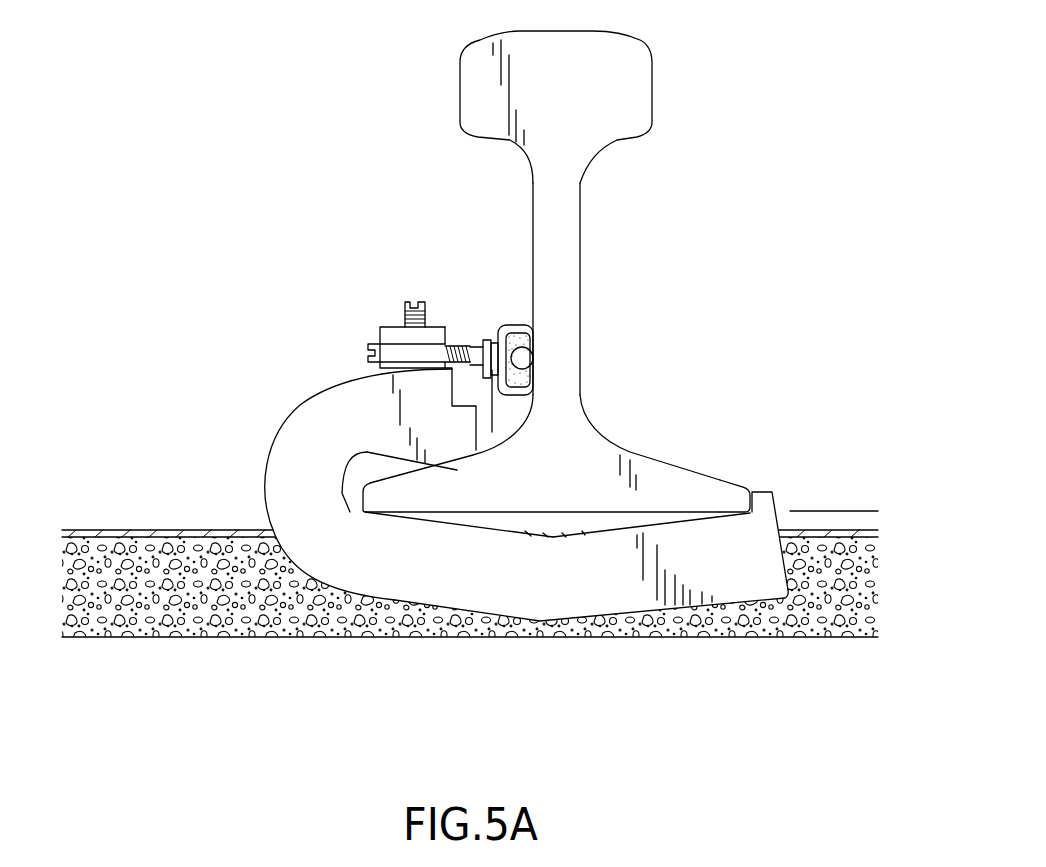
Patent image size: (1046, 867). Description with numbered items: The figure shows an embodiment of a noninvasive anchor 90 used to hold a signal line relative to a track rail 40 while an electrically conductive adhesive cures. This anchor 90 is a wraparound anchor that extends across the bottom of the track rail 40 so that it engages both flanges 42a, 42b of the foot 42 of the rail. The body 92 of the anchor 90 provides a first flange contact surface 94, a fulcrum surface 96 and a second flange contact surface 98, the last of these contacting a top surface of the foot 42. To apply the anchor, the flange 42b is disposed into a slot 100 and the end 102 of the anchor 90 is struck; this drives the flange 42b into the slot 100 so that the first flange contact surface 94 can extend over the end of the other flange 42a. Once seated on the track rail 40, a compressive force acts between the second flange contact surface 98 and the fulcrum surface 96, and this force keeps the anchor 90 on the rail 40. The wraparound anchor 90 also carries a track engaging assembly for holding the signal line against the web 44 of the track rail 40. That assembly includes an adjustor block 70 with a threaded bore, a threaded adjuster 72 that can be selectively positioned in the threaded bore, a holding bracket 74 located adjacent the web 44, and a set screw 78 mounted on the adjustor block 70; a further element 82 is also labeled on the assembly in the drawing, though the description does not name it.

The track rail 40 is at (665, 102).
The foot 42 is at (579, 494).
The flange 42a is at (710, 506).
The flange 42b is at (442, 504).
The web 44 is at (580, 382).
The adjustor block 70 is at (376, 316).
The threaded adjuster 72 is at (362, 337).
The holding bracket 74 is at (525, 324).
The set screw 78 is at (400, 293).
The clamp arm 82 is at (392, 332).
The noninvasive anchor 90 is at (318, 596).
The body 92 is at (522, 598).
The first flange contact surface 94 is at (762, 493).
The fulcrum surface 96 is at (365, 512).
The second flange contact surface 98 is at (460, 457).
The slot 100 is at (354, 502).
The end 102 is at (263, 458).